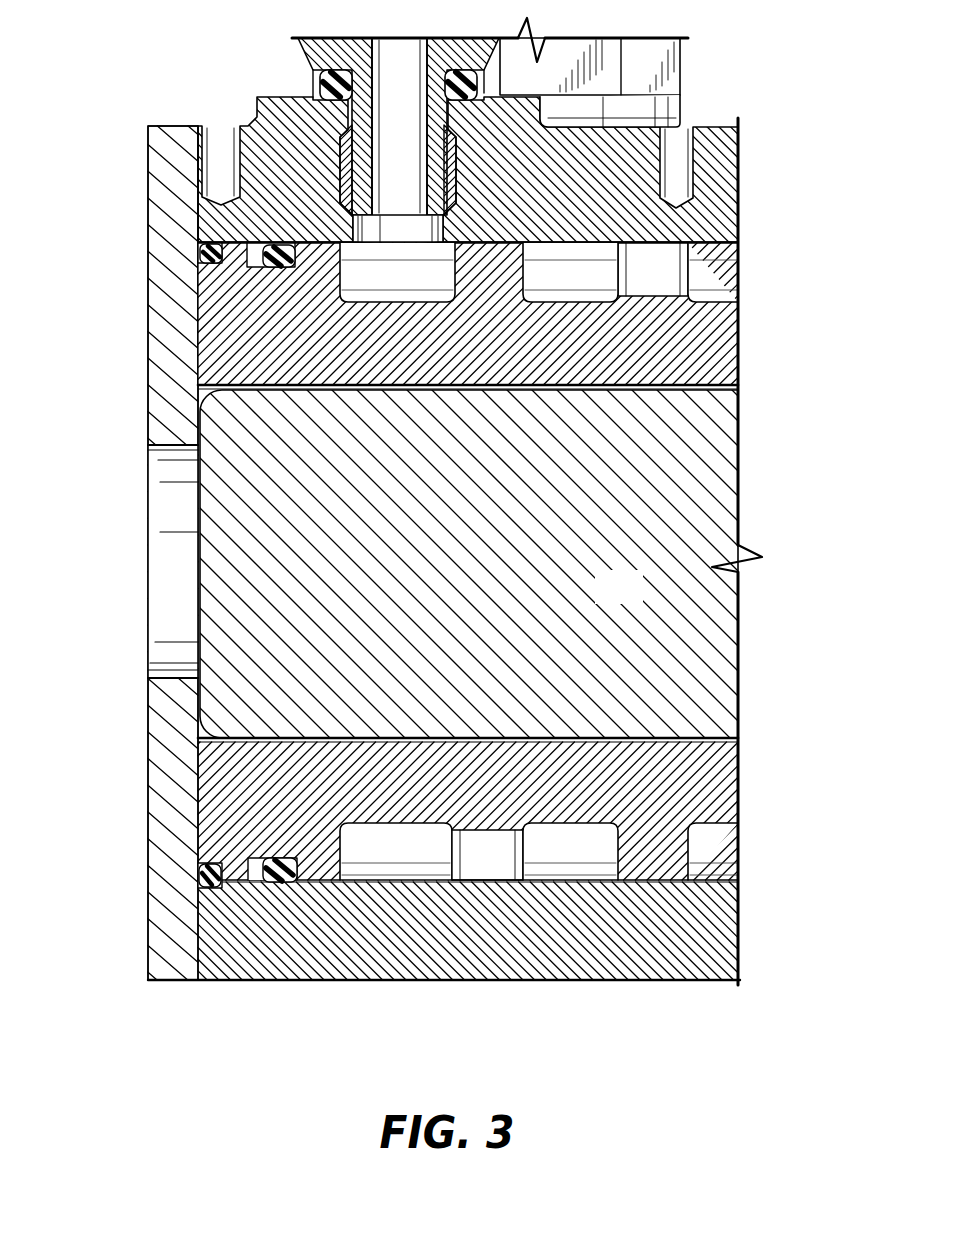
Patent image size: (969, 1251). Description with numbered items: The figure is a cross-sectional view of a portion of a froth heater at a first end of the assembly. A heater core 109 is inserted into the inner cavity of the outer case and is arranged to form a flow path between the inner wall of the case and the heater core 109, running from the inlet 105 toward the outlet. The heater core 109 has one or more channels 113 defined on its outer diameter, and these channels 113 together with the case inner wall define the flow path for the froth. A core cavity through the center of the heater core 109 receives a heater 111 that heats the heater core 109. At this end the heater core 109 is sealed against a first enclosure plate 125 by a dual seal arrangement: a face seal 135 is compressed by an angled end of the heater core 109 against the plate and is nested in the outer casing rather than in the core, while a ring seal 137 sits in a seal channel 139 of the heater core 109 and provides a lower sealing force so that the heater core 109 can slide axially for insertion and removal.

The inlet 105 is at (358, 222).
The heater core 109 is at (690, 350).
The heater 111 is at (638, 600).
The channels 113 is at (583, 280).
The first enclosure plate 125 is at (168, 256).
The face seal 135 is at (222, 890).
The ring seal 137 is at (287, 877).
The seal channel 139 is at (255, 877).